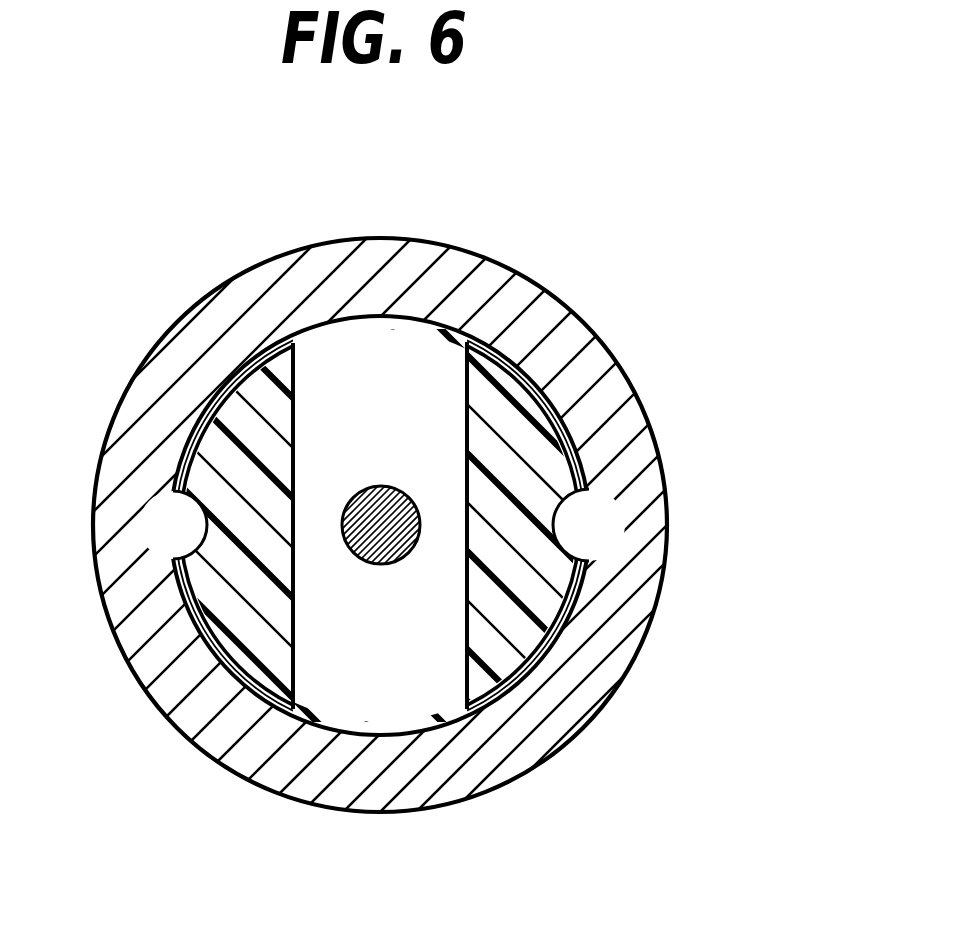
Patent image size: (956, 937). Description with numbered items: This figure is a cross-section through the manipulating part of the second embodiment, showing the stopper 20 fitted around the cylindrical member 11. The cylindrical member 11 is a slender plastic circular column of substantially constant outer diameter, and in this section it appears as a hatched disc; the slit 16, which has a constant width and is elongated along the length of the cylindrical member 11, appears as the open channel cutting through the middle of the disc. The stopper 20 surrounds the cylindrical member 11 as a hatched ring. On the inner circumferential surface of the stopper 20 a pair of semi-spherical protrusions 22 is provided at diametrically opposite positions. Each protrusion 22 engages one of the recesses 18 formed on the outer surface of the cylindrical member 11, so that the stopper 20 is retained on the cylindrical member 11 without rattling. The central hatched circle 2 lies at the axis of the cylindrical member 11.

The shaft 2 is at (380, 563).
The cylindrical member 11 is at (530, 630).
The slit 16 is at (293, 402).
The recess 18 is at (556, 528).
The stopper 20 is at (577, 336).
The semi-spherical protrusion 22 is at (492, 515).